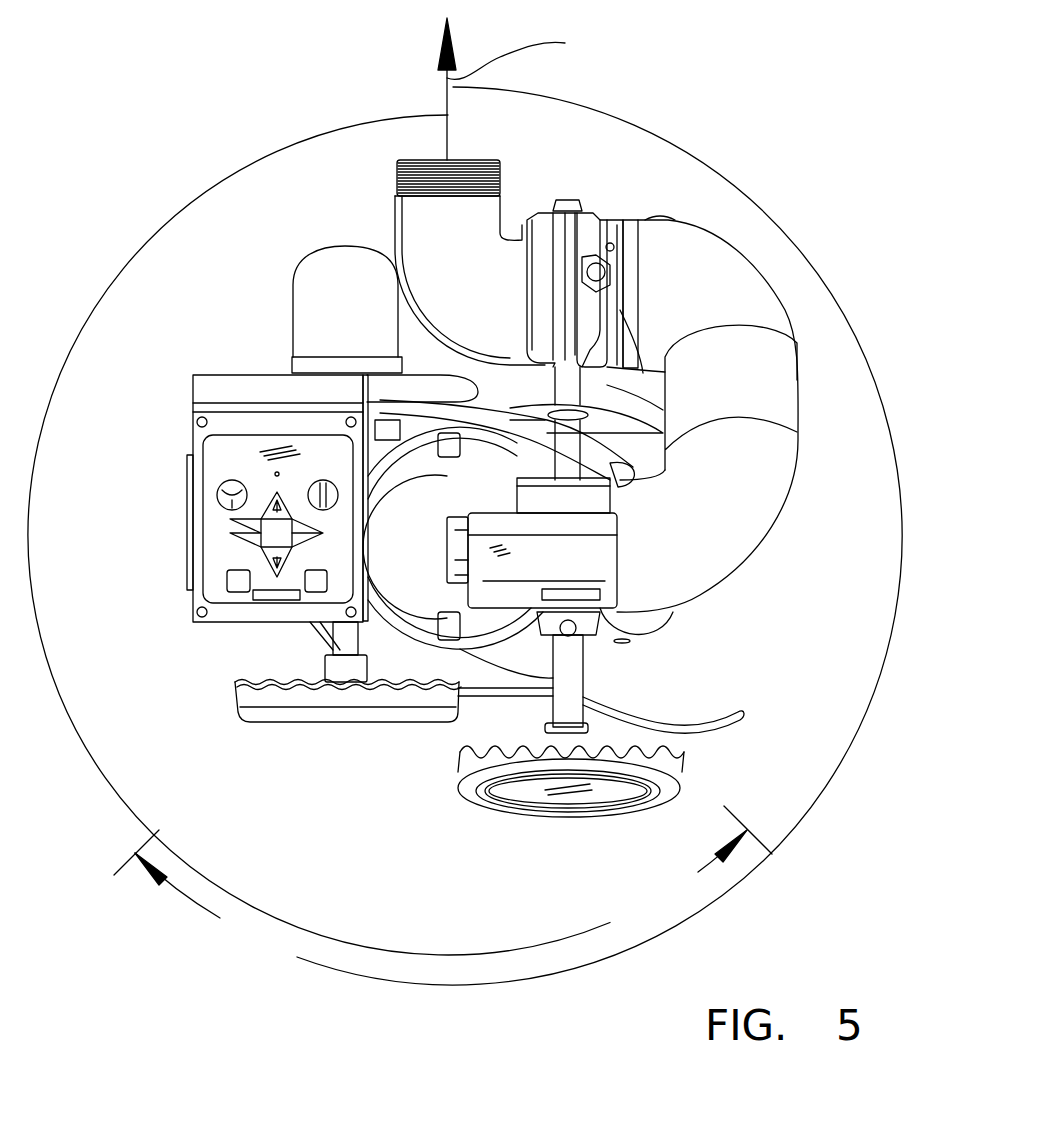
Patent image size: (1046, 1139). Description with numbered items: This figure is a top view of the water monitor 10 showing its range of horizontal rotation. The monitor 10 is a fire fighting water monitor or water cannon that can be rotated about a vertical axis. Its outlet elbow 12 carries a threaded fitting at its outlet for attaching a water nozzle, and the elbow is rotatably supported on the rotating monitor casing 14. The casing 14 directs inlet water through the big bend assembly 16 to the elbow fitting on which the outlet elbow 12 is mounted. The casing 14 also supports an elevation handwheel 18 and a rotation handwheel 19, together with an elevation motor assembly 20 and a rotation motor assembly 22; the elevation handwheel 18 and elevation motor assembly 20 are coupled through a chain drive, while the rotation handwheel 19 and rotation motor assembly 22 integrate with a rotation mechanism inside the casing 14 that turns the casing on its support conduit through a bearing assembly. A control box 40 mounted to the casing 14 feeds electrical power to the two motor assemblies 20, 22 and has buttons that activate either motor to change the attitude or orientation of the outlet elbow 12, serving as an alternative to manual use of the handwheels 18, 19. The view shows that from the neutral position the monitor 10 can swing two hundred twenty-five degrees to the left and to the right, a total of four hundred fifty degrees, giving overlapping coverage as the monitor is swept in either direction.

The water monitor 10 is at (162, 442).
The outlet elbow 12 is at (487, 215).
The monitor casing 14 is at (587, 225).
The big bend assembly 16 is at (730, 543).
The elevation handwheel 18 is at (470, 797).
The rotation handwheel 19 is at (295, 713).
The elevation motor assembly 20 is at (648, 625).
The rotation motor assembly 22 is at (334, 263).
The control box 40 is at (215, 552).